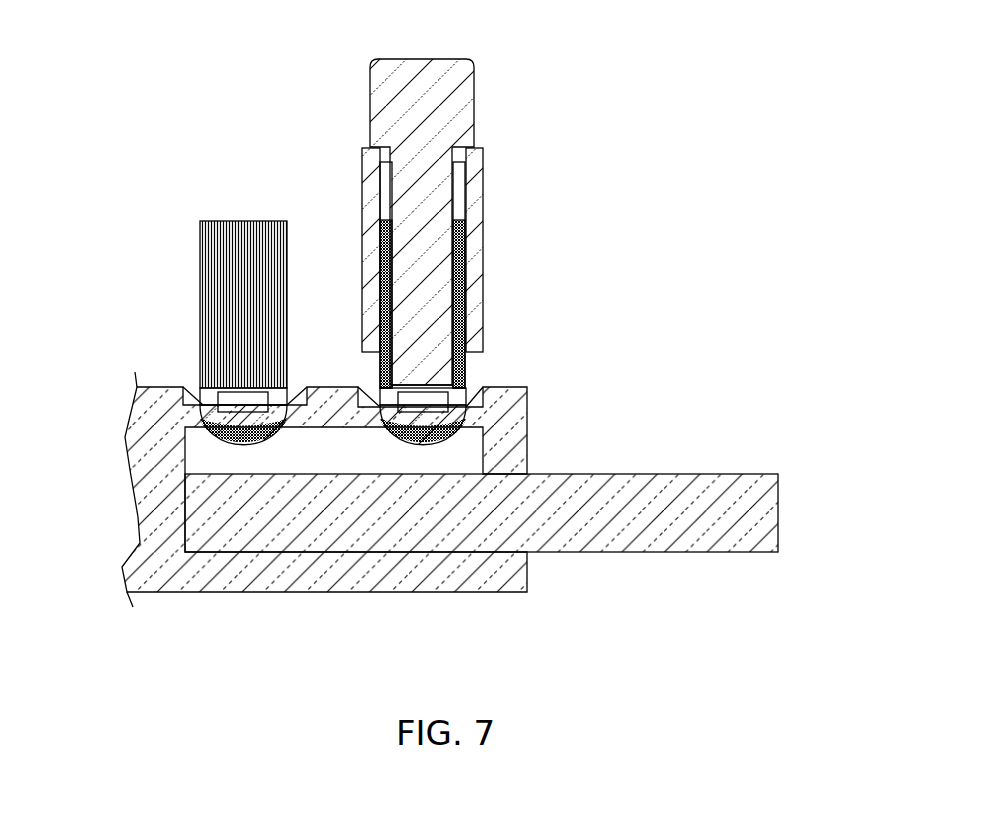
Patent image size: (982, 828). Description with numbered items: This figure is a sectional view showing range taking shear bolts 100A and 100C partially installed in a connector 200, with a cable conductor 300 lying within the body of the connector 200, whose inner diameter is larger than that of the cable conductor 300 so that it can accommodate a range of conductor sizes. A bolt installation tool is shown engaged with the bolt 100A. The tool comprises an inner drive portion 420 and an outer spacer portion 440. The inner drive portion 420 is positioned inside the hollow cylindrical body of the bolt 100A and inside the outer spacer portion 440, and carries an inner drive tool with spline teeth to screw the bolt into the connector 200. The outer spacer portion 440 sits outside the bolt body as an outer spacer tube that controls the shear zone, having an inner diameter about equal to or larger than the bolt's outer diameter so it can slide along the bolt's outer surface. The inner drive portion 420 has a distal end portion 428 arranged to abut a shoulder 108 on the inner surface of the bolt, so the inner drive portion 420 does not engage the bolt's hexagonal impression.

The range taking shear bolt 100C is at (187, 273).
The range taking shear bolt 100A is at (367, 375).
The shoulder 108 is at (452, 385).
The connector 200 is at (312, 593).
The cable conductor 300 is at (627, 553).
The inner drive portion 420 is at (455, 185).
The distal end portion 428 is at (443, 367).
The outer spacer portion 440 is at (483, 233).